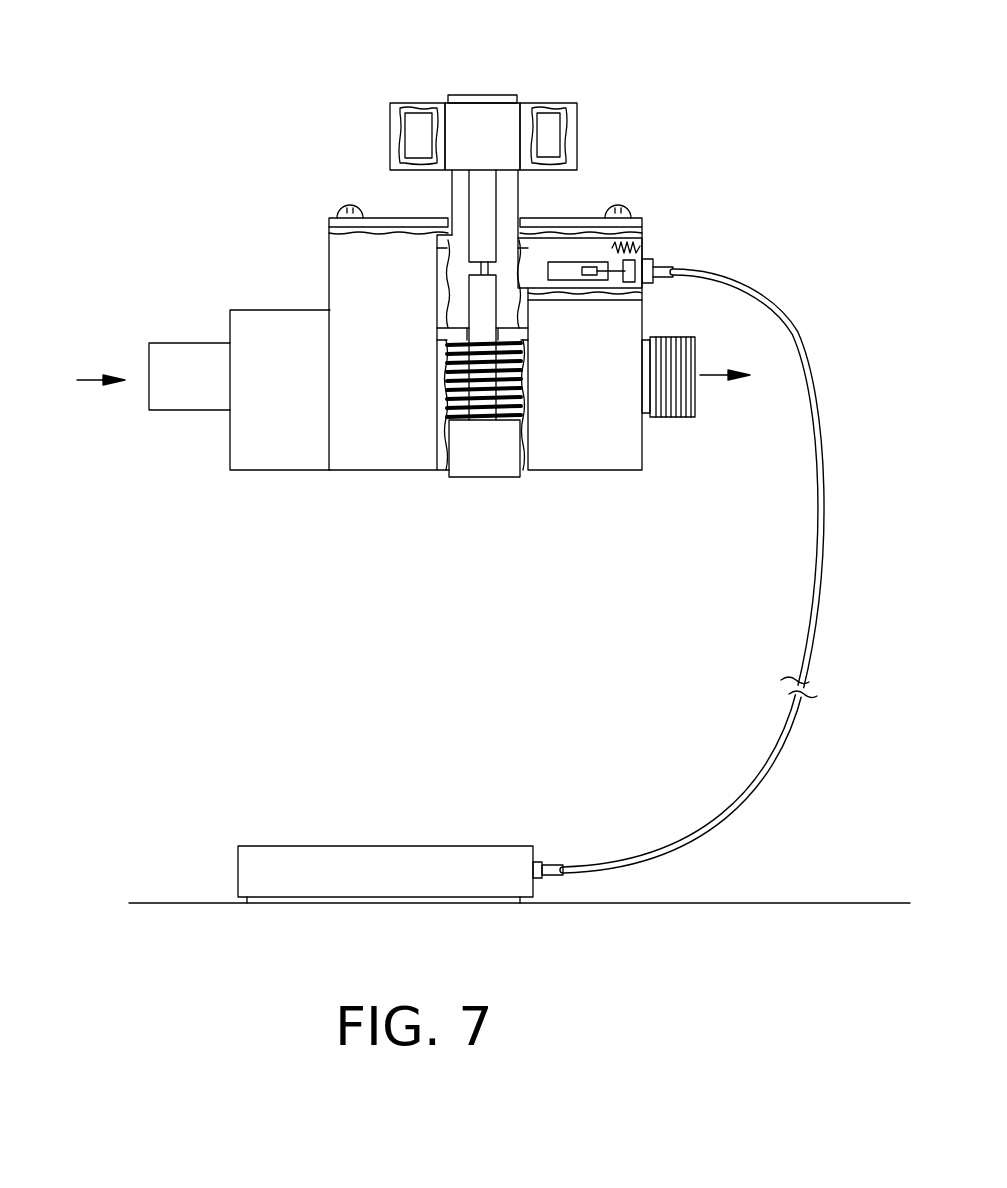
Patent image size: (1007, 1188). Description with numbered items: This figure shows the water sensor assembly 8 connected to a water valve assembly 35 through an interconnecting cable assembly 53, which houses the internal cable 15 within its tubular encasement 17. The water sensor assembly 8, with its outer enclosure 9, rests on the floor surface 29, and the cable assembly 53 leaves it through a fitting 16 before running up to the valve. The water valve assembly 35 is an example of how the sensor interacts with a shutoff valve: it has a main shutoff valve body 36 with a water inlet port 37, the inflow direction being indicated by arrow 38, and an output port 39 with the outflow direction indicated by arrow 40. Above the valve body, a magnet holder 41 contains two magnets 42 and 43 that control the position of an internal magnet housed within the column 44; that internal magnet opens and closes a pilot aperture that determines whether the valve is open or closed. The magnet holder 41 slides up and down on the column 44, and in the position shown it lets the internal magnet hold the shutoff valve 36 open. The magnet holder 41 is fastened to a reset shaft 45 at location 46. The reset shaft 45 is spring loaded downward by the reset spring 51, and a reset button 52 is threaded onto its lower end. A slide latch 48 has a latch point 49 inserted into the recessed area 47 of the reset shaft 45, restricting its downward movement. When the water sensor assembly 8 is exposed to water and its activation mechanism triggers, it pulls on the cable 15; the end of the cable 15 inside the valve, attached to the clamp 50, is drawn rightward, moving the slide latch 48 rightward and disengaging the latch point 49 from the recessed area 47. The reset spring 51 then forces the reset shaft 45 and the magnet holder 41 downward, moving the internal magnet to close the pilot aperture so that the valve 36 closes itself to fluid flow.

The water sensor assembly 8 is at (277, 780).
The outer enclosure 9 is at (353, 853).
The cable 15 is at (628, 285).
The connector 16 is at (550, 863).
The tubular encasement 17 is at (690, 268).
The floor surface 29 is at (173, 902).
The water valve assembly 35 is at (180, 138).
The shutoff valve body 36 is at (355, 290).
The water inlet port 37 is at (163, 362).
The arrow 38 is at (90, 373).
The output port 39 is at (680, 415).
The arrow 40 is at (723, 383).
The magnet holder 41 is at (394, 115).
The magnet 42 is at (558, 128).
The magnet 43 is at (410, 138).
The column 44 is at (488, 97).
The reset shaft 45 is at (488, 210).
The location 46 is at (488, 170).
The recessed area 47 is at (480, 267).
The slide latch 48 is at (542, 255).
The latch point 49 is at (488, 264).
The clamp 50 is at (587, 276).
The reset spring 51 is at (440, 387).
The reset button 52 is at (497, 468).
The cable assembly 53 is at (789, 648).